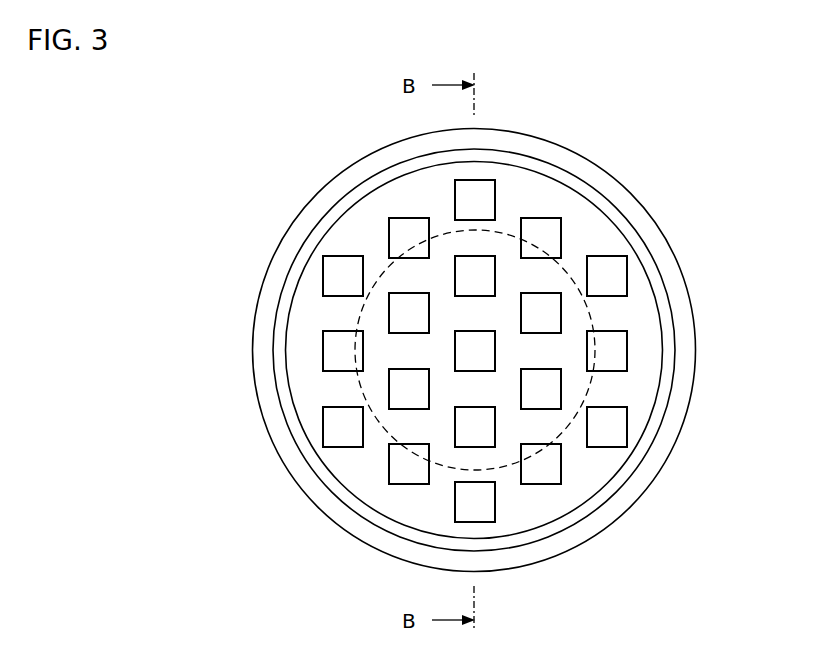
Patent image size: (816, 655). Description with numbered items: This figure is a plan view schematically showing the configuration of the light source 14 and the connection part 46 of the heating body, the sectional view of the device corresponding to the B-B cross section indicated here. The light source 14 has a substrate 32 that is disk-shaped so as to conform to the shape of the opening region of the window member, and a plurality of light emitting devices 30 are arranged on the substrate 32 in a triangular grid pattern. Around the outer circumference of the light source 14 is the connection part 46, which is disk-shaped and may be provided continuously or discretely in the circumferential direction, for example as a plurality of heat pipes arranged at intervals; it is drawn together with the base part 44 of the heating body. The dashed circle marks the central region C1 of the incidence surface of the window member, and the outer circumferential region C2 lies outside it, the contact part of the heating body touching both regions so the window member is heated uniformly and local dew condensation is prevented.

The light source 14 is at (180, 297).
The light emitting devices 30 is at (325, 279).
The substrate 32 is at (330, 232).
The base part 44 is at (642, 253).
The connection part 46 is at (680, 297).
The central region C1 is at (580, 388).
The outer circumferential region C2 is at (652, 353).